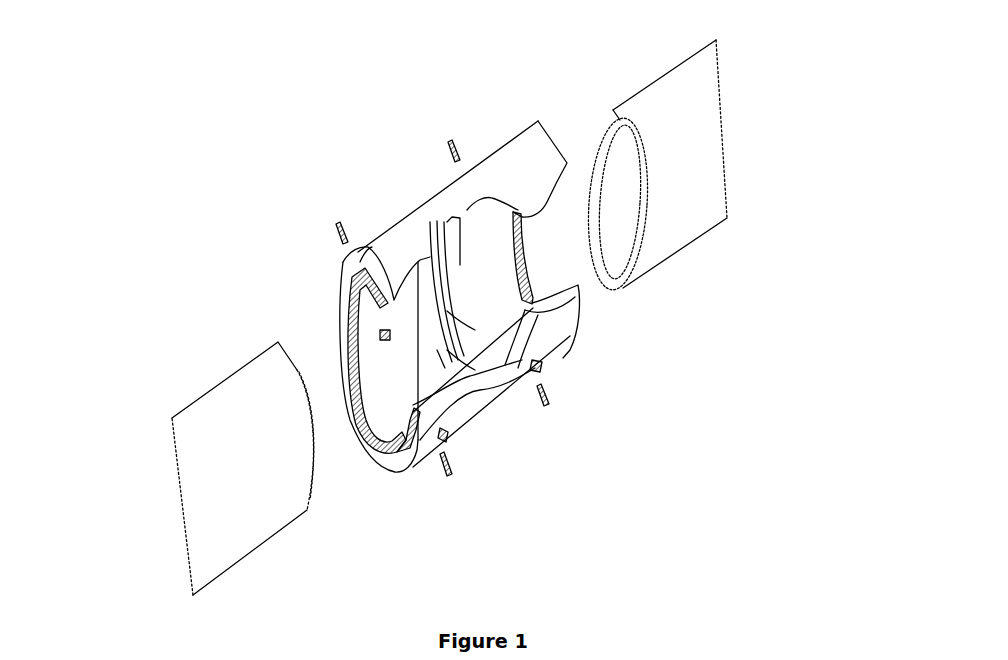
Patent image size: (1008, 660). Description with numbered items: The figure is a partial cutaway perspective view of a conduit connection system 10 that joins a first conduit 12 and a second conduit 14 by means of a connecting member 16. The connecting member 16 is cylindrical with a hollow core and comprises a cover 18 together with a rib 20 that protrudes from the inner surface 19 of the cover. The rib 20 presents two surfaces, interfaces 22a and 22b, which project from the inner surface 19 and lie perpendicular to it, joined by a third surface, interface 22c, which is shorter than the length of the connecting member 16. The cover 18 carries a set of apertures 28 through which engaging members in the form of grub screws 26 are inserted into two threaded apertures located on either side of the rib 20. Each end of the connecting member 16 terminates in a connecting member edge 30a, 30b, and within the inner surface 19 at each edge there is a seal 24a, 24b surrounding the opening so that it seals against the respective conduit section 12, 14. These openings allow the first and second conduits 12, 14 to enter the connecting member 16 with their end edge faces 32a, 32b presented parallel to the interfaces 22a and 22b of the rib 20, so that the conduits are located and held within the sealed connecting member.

The conduit connection system 10 is at (718, 505).
The first conduit 12 is at (218, 451).
The second conduit 14 is at (660, 168).
The connecting member 16 is at (583, 342).
The cover 18 is at (410, 232).
The inner surface 19 is at (457, 267).
The rib 20 is at (425, 282).
The interface 22a is at (440, 352).
The interface 22b is at (447, 312).
The interface 22c is at (447, 350).
The seal 24a is at (403, 463).
The seal 24b is at (525, 272).
The grub screws 26 is at (452, 145).
The apertures 28 is at (380, 335).
The connecting member edge 30a is at (367, 262).
The connecting member edge 30b is at (560, 147).
The end edge face 32a is at (312, 405).
The end edge face 32b is at (623, 120).